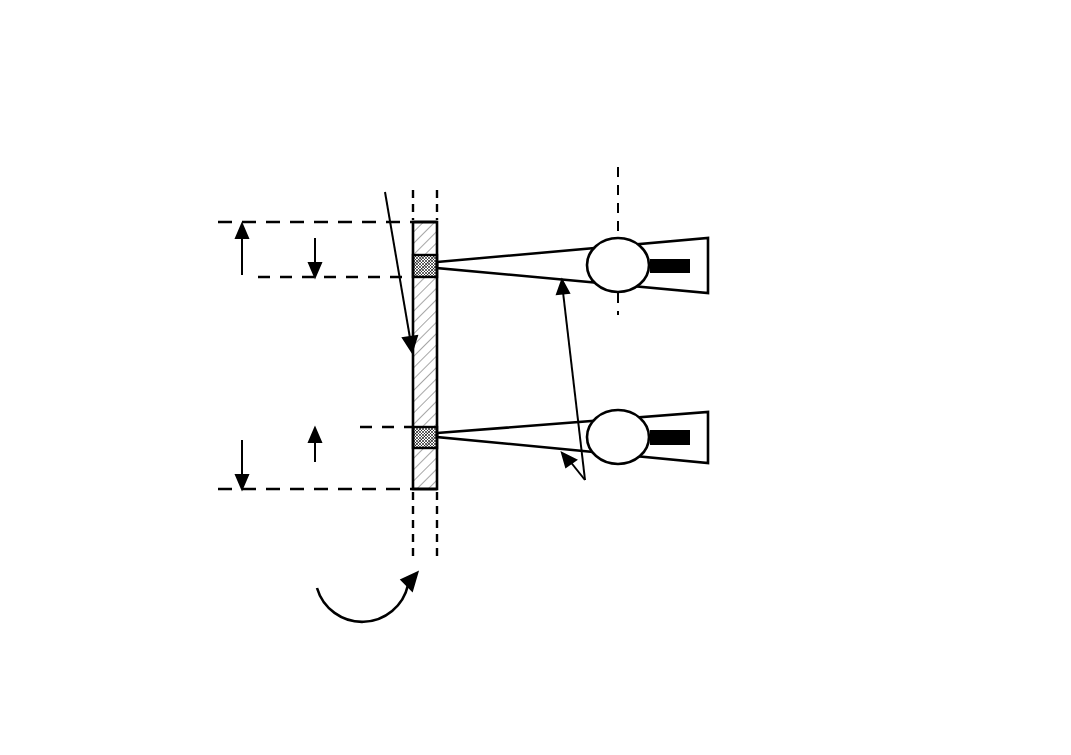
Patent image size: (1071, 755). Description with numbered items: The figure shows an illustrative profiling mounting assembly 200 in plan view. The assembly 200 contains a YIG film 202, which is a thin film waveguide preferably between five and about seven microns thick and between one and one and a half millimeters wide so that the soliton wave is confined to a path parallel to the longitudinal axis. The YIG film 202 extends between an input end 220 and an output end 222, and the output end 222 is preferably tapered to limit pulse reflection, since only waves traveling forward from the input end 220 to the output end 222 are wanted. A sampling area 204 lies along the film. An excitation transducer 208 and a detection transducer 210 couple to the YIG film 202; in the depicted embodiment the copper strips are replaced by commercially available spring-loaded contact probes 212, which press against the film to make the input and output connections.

The profiling mounting assembly 200 is at (687, 85).
The YIG film 202 is at (477, 375).
The sampling area 204 is at (234, 355).
The excitation transducer 208 is at (660, 400).
The detection transducer 210 is at (663, 219).
The spring-loaded contact probes 212 is at (520, 262).
The input end 220 is at (277, 555).
The output end 222 is at (503, 163).